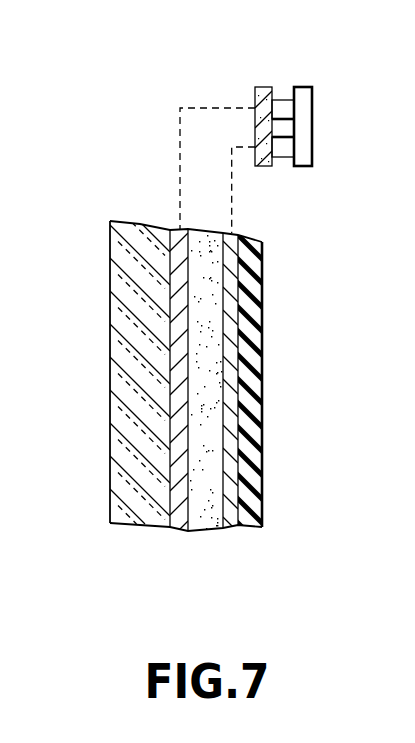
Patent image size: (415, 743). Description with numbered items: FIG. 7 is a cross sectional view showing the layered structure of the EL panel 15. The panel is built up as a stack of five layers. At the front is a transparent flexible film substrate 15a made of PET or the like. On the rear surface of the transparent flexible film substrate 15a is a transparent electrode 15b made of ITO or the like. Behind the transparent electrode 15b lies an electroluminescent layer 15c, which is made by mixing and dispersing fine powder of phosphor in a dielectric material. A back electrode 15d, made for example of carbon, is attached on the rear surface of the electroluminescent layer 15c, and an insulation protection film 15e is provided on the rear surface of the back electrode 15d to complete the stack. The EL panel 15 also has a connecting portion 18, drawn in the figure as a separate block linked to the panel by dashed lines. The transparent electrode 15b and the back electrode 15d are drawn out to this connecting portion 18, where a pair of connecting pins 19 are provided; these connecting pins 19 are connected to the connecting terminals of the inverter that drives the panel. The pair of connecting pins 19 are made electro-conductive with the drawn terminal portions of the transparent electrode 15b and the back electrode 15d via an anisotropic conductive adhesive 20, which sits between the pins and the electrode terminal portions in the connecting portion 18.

The EL panel 15 is at (191, 412).
The transparent flexible film substrate 15a is at (122, 382).
The transparent electrode 15b is at (182, 527).
The electroluminescent layer 15c is at (213, 530).
The back electrode 15d is at (228, 532).
The insulation protection film 15e is at (260, 528).
The connecting portion 18 is at (322, 144).
The connecting pins 19 is at (280, 105).
The anisotropic conductive adhesive 20 is at (262, 87).